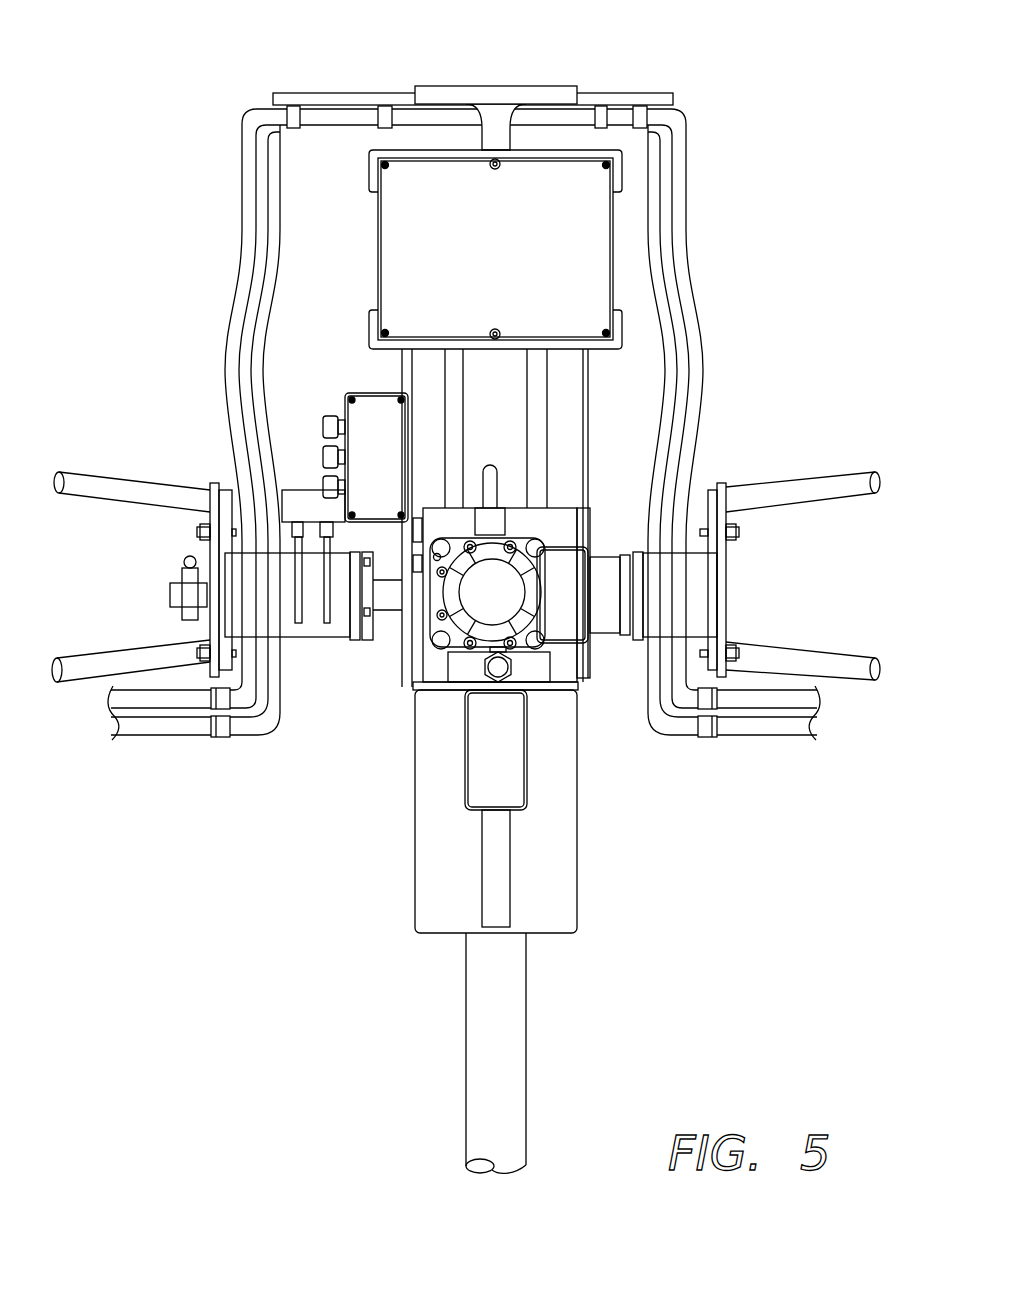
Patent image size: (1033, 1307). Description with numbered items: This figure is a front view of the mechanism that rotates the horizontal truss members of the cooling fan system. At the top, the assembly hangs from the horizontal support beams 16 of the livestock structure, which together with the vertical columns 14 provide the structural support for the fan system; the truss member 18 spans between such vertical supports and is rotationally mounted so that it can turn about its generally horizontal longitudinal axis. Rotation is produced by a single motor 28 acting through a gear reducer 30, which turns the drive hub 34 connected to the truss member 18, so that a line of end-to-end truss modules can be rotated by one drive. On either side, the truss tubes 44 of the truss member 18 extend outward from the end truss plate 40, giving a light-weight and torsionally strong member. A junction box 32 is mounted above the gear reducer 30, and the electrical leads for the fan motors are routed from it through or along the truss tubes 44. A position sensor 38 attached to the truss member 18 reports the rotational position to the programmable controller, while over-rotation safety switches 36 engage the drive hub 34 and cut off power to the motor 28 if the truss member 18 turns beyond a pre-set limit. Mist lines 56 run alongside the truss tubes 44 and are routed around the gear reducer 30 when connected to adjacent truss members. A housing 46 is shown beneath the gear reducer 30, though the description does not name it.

The vertical columns 14 is at (480, 1000).
The horizontal support beams 16 is at (440, 85).
The truss member 18 is at (466, 544).
The motor 28 is at (505, 605).
The gear reducer 30 is at (519, 541).
The junction box 32 is at (417, 221).
The drive hub 34 is at (336, 634).
The over-rotation safety switches 36 is at (298, 602).
The position sensor 38 is at (188, 590).
The truss plate 40 is at (212, 500).
The truss tubes 44 is at (128, 492).
The motor housing 46 is at (543, 688).
The mist lines 56 is at (172, 702).